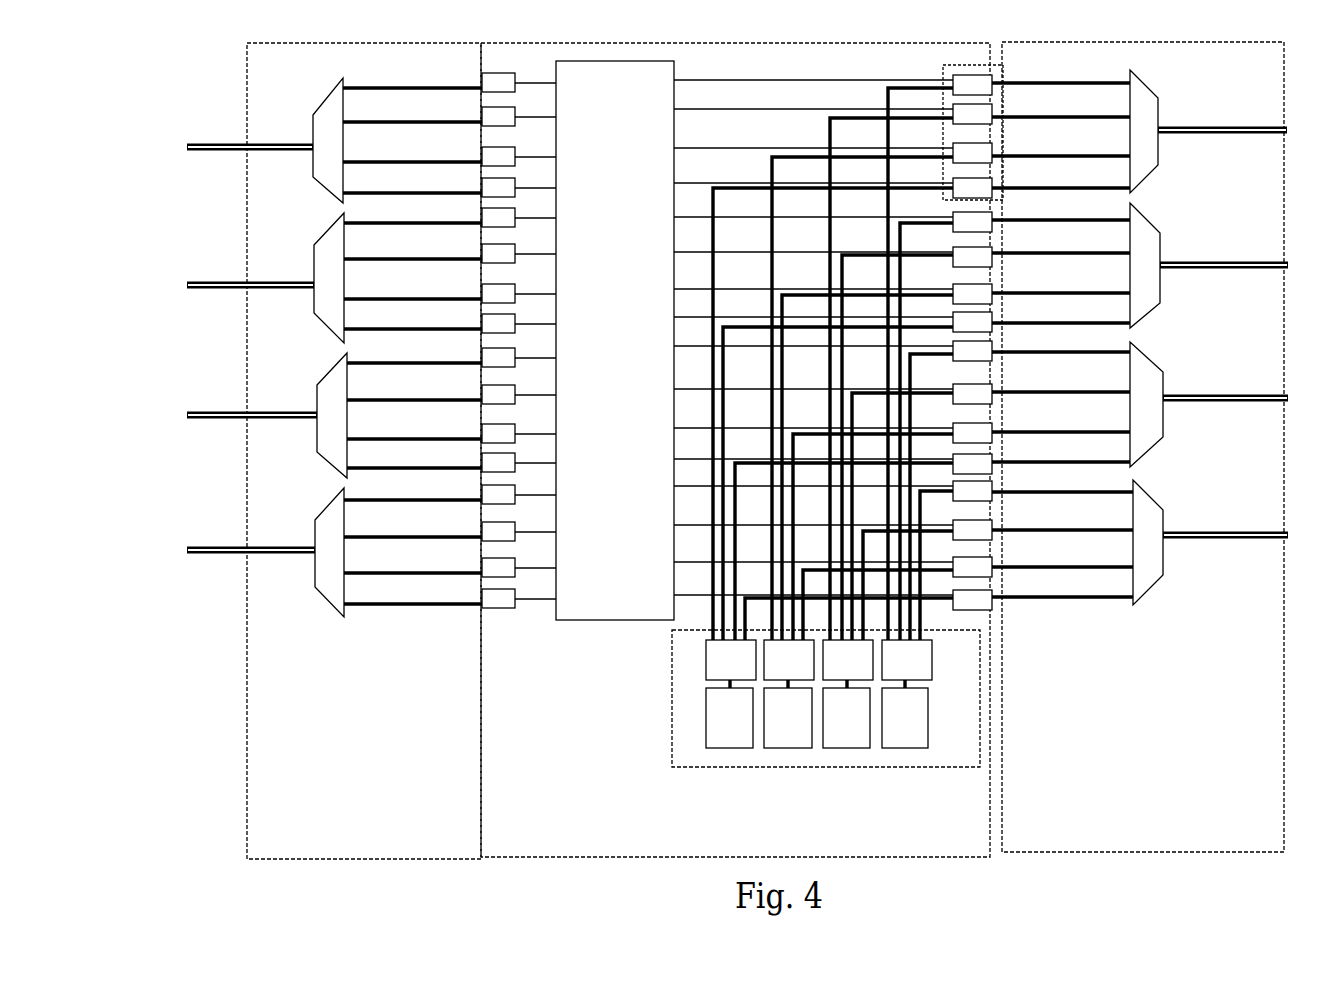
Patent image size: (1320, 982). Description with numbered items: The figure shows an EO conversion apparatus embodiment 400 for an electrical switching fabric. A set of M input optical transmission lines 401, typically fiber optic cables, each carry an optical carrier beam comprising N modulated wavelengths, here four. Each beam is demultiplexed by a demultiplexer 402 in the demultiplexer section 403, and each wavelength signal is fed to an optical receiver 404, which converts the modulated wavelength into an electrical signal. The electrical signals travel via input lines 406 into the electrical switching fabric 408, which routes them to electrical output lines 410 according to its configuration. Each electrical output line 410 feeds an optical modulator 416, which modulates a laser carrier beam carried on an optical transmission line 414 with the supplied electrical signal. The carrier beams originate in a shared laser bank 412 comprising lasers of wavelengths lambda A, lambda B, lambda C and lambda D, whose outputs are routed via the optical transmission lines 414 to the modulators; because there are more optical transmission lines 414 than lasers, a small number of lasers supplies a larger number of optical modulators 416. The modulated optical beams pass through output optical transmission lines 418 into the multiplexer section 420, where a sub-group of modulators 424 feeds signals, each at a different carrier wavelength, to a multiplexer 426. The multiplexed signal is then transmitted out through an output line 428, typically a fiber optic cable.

The EO conversion apparatus embodiment 400 is at (234, 745).
The input optical transmission line 401 is at (197, 153).
The demultiplexer 402 is at (328, 120).
The demultiplexer section 403 is at (250, 832).
The optical receiver 404 is at (515, 92).
The input line 406 is at (543, 84).
The electrical switching fabric 408 is at (674, 65).
The electrical output line 410 is at (775, 78).
The shared laser bank 412 is at (672, 668).
The optical transmission line 414 is at (887, 98).
The optical modulator 416 is at (953, 76).
The output optical transmission line 418 is at (1100, 79).
The multiplexer section 420 is at (1087, 853).
The sub-group of modulators 424 is at (943, 129).
The multiplexer 426 is at (1140, 103).
The output line 428 is at (1202, 137).